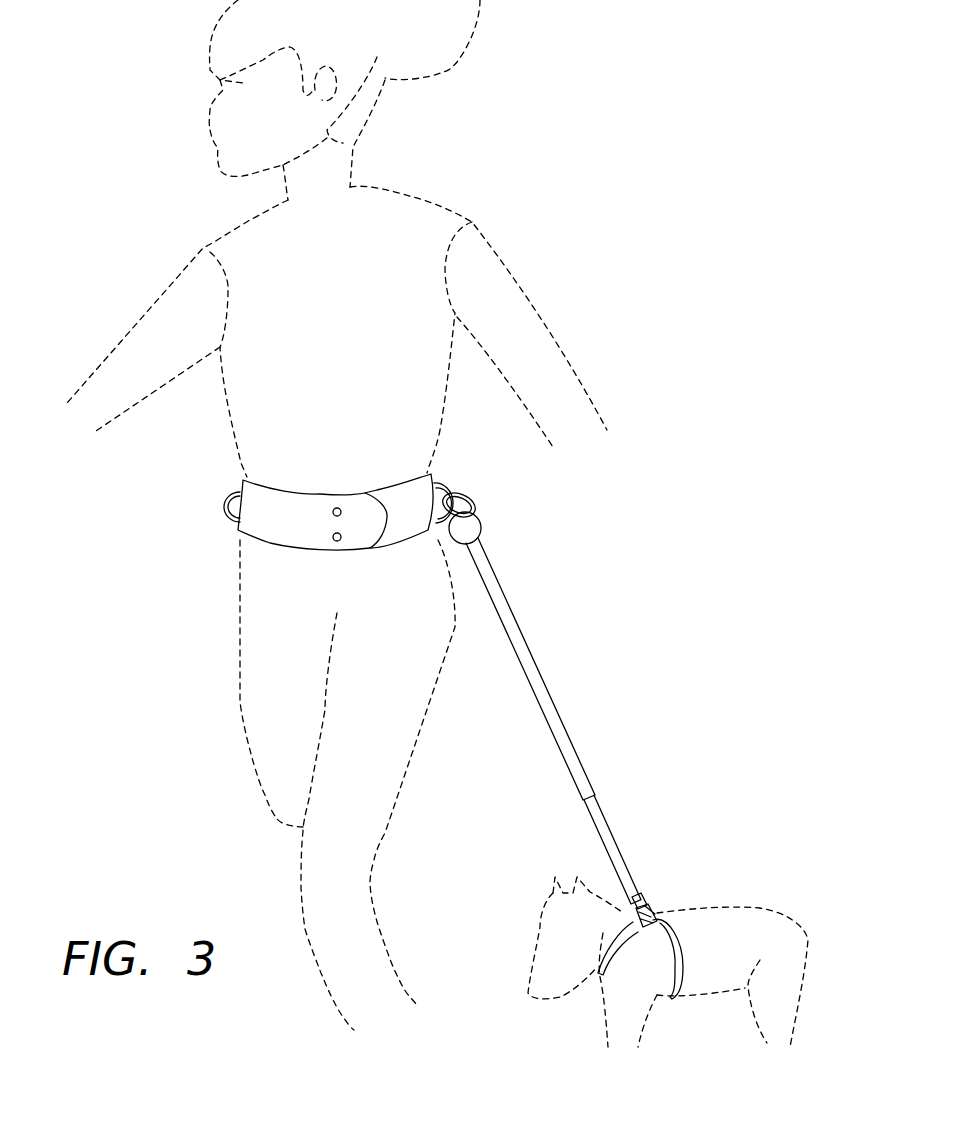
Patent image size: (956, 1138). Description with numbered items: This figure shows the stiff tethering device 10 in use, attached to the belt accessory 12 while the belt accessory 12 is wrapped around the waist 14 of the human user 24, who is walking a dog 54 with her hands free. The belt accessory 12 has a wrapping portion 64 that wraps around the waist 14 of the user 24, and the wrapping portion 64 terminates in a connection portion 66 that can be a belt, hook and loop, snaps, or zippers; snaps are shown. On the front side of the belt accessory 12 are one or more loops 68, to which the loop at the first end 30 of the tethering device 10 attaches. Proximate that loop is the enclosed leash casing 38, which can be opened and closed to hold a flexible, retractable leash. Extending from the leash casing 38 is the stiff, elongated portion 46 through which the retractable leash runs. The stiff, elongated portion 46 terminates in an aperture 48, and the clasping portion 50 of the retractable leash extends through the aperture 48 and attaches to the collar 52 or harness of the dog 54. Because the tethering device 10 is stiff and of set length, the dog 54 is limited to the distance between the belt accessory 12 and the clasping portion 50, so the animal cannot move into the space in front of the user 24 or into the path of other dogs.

The tethering device 10 is at (575, 707).
The belt accessory 12 is at (289, 478).
The waist 14 is at (233, 535).
The user 24 is at (422, 197).
The first end 30 is at (475, 493).
The leash casing 38 is at (482, 528).
The stiff, elongated portion 46 is at (567, 733).
The aperture 48 is at (645, 898).
The clasping portion 50 is at (660, 912).
The collar 52 is at (633, 922).
The dog 54 is at (644, 898).
The wrapping portion 64 is at (287, 520).
The connection portion 66 is at (343, 530).
The loops 68 is at (220, 498).